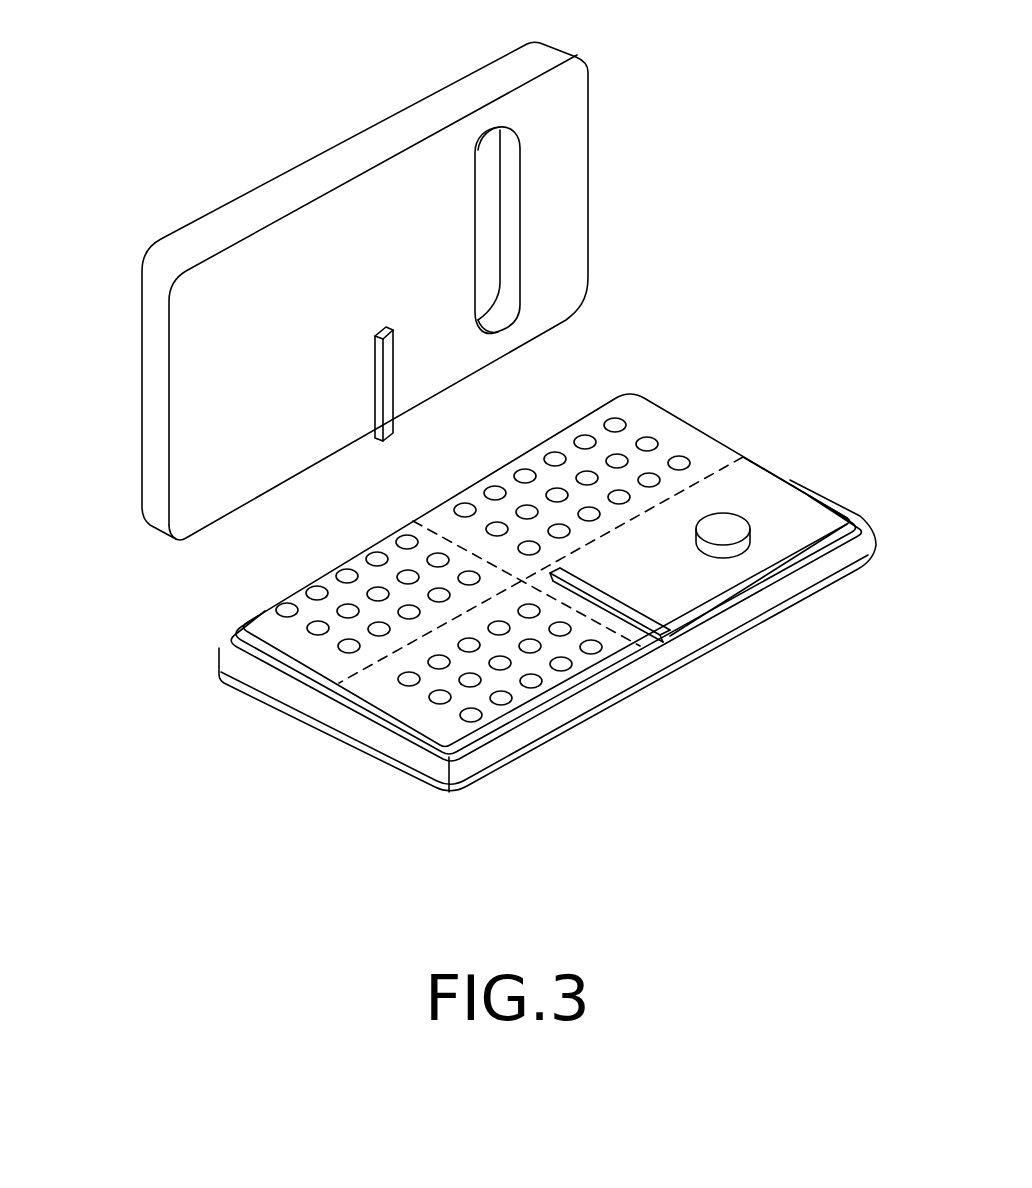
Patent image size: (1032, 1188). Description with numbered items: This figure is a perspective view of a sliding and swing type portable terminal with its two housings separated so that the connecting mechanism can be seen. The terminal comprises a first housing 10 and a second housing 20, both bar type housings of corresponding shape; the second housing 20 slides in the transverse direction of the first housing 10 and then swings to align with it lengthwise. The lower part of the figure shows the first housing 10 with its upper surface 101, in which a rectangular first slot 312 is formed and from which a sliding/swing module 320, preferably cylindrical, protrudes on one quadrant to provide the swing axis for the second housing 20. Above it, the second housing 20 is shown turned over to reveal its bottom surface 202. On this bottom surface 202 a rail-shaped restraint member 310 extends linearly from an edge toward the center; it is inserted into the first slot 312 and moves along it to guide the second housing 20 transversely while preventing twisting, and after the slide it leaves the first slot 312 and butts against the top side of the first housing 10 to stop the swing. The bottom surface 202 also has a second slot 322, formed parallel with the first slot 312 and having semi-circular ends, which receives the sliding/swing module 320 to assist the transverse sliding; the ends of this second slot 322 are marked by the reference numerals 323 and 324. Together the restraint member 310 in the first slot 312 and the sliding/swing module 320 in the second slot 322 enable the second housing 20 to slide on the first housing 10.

The first housing 10 is at (547, 592).
The second housing 20 is at (369, 277).
The upper surface 101 is at (805, 517).
The bottom surface 202 is at (558, 118).
The restraint member 310 is at (378, 395).
The first slot 312 is at (663, 637).
The sliding/swing module 320 is at (733, 522).
The second slot 322 is at (488, 217).
The slot upper end 323 is at (490, 133).
The slot lower end 324 is at (507, 330).